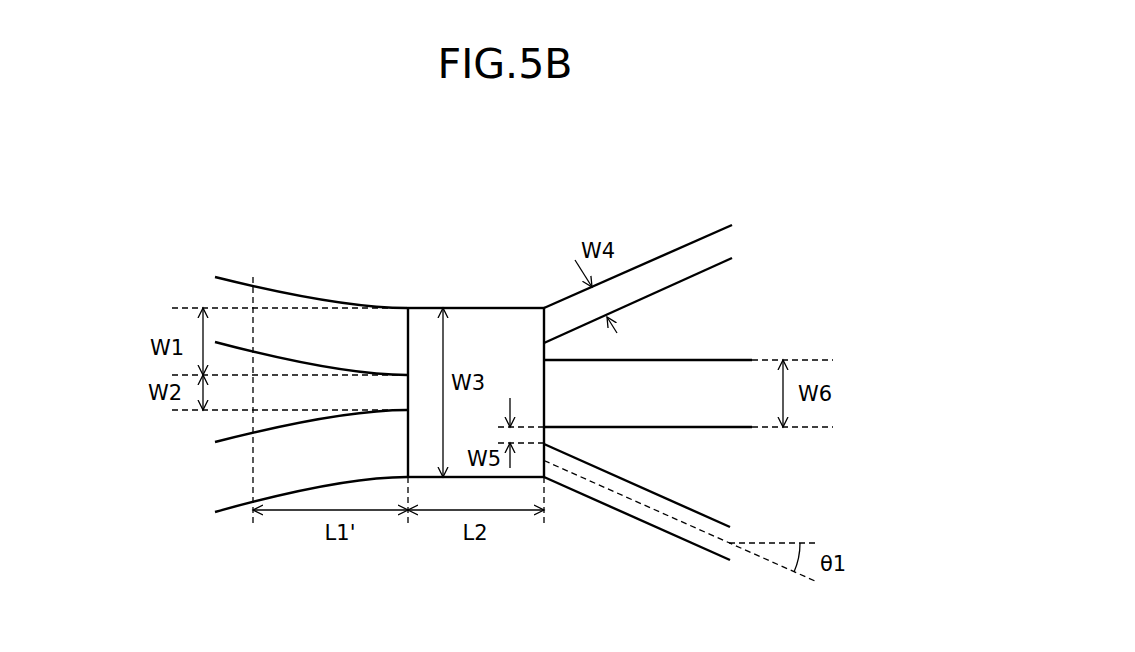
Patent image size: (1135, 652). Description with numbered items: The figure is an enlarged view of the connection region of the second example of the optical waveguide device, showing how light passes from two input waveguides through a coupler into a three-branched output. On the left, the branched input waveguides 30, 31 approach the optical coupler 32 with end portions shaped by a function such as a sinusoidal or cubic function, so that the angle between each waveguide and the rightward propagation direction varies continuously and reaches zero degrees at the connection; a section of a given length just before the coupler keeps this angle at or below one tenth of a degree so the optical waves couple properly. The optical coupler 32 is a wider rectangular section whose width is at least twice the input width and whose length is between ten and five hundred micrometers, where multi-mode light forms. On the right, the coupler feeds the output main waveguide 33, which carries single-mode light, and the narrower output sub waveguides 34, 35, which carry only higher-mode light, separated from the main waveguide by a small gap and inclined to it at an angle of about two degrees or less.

The input waveguide 30 is at (342, 325).
The input waveguide 31 is at (307, 463).
The optical coupler 32 is at (497, 307).
The output main waveguide 33 is at (700, 398).
The output sub waveguide 34 is at (655, 275).
The output sub waveguide 35 is at (635, 510).